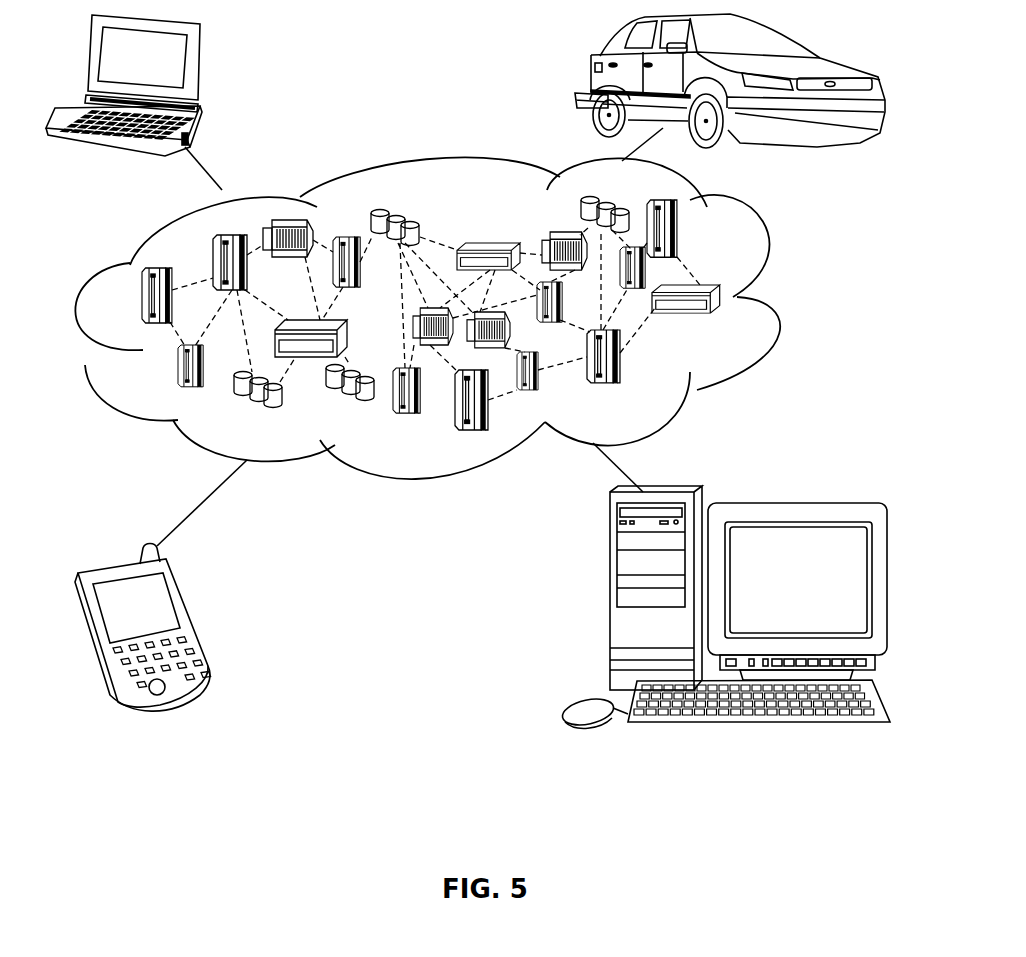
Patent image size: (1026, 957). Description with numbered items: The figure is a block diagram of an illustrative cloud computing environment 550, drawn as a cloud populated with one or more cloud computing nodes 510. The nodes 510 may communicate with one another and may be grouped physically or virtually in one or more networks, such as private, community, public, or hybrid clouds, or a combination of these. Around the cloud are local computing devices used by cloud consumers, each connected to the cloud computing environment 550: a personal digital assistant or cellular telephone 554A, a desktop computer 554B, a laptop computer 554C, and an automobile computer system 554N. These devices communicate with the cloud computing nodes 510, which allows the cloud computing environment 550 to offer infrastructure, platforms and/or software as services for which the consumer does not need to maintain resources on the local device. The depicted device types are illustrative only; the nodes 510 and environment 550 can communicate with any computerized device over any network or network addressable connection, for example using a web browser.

The cloud computing nodes 510 is at (745, 322).
The cloud computing environment 550 is at (763, 260).
The personal digital assistant (PDA) or cellular telephone 554A is at (192, 620).
The desktop computer 554B is at (608, 600).
The laptop computer 554C is at (198, 64).
The automobile computer system 554N is at (586, 63).